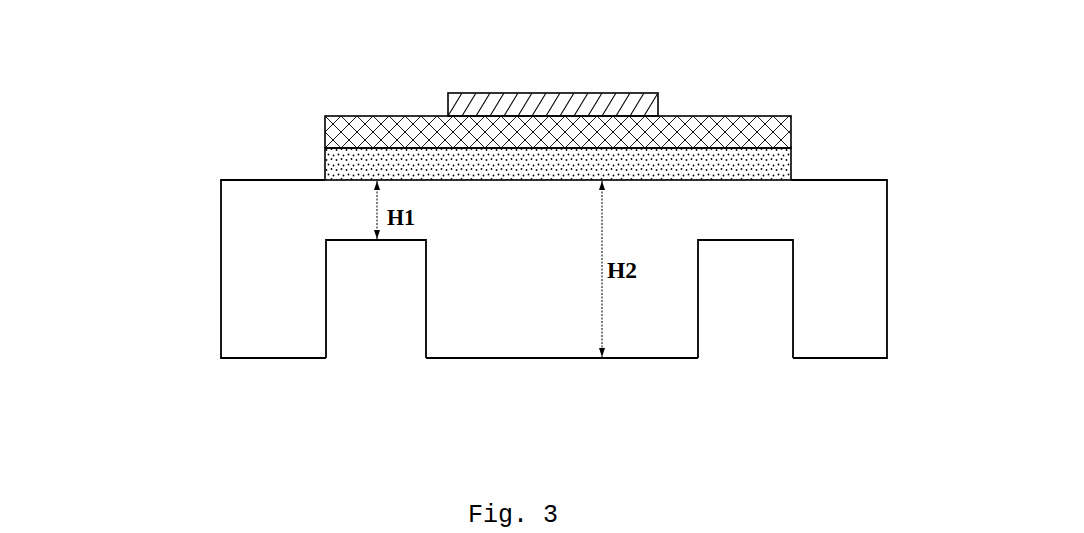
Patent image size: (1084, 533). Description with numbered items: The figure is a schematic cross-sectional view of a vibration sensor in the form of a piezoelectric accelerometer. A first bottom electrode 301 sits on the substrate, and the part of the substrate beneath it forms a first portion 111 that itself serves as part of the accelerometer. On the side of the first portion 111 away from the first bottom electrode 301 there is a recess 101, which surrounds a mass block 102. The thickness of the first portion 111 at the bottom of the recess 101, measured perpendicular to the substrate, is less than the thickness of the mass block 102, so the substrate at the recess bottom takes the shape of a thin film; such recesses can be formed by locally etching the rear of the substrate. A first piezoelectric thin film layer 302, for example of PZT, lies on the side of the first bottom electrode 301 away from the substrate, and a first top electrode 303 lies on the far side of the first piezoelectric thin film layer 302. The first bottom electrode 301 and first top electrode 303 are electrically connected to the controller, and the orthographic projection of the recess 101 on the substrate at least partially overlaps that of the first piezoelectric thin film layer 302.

The first portion of the substrate 111 is at (242, 213).
The recess 101 is at (737, 342).
The mass block 102 is at (575, 320).
The first bottom electrode 301 is at (792, 163).
The first piezoelectric thin film layer 302 is at (785, 117).
The first top electrode 303 is at (635, 92).